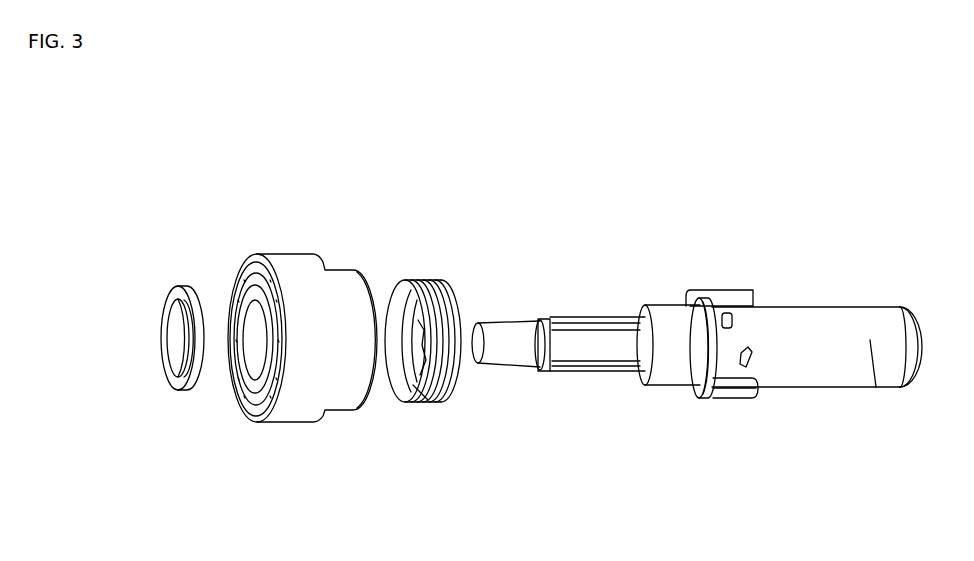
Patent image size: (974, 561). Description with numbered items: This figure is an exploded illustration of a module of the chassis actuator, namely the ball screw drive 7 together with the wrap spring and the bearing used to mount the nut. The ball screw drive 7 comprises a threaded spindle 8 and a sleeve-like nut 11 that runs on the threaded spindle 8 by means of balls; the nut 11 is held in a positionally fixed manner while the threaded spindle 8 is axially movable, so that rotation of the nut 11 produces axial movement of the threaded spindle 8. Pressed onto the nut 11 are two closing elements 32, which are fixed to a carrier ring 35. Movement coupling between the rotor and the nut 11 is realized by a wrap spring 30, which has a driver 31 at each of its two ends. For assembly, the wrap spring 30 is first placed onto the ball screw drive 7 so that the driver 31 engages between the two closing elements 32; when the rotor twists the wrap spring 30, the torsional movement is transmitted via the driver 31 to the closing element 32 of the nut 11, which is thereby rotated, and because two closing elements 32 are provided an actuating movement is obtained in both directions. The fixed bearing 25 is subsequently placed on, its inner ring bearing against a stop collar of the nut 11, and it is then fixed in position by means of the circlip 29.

The ball screw 7 is at (822, 300).
The threaded spindle 8 is at (520, 335).
The nut 11 is at (873, 378).
The fixed bearing 25 is at (236, 268).
The circlip 29 is at (183, 395).
The wrap spring 30 is at (427, 285).
The driver 31 is at (428, 400).
The closing element 32 is at (727, 292).
The carrier ring 35 is at (706, 396).